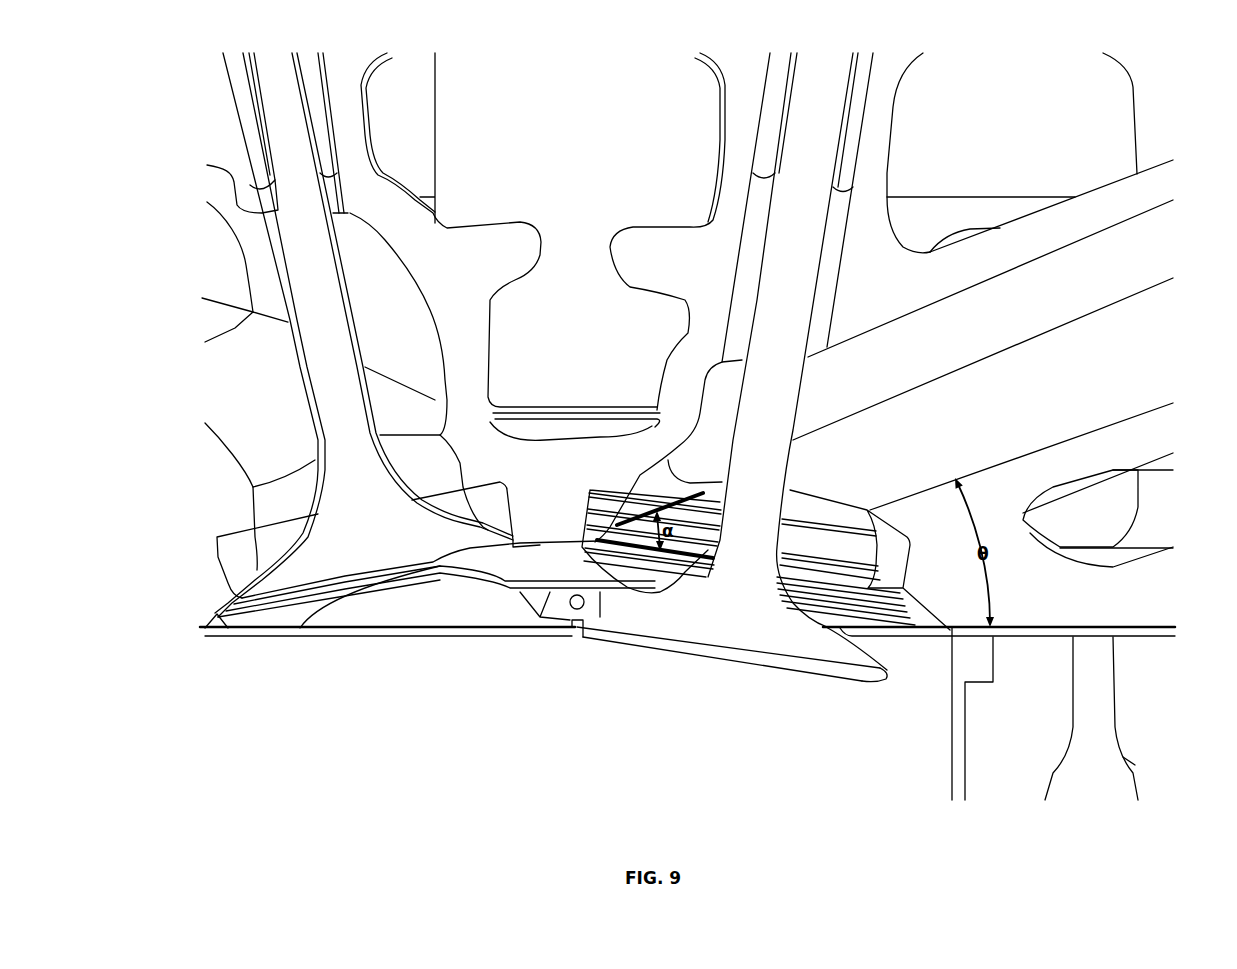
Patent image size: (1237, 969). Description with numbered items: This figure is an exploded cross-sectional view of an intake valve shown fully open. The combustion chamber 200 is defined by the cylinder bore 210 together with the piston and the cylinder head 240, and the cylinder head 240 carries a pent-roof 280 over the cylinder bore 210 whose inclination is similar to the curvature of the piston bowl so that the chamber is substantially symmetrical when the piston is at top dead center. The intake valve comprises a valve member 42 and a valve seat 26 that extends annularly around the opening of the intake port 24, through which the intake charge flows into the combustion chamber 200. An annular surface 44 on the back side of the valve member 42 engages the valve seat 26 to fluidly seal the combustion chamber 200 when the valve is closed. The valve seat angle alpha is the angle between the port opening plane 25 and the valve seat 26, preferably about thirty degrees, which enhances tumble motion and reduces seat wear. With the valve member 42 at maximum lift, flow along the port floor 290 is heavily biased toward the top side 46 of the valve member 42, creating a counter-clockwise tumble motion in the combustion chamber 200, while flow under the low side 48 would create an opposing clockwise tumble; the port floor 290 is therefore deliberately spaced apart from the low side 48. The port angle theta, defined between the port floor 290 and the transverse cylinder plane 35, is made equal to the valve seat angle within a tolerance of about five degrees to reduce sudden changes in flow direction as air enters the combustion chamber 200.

The intake port 24 is at (1100, 291).
The port opening plane 25 is at (622, 539).
The valve seat 26 is at (603, 534).
The transverse cylinder plane 35 is at (927, 637).
The valve member 42 is at (777, 672).
The annular surface 44 is at (886, 677).
The top side 46 is at (626, 600).
The low side 48 is at (887, 677).
The combustion chamber 200 is at (590, 712).
The cylinder bore 210 is at (960, 763).
The cylinder head 240 is at (575, 473).
The pent-roof 280 is at (535, 545).
The port floor 290 is at (996, 452).